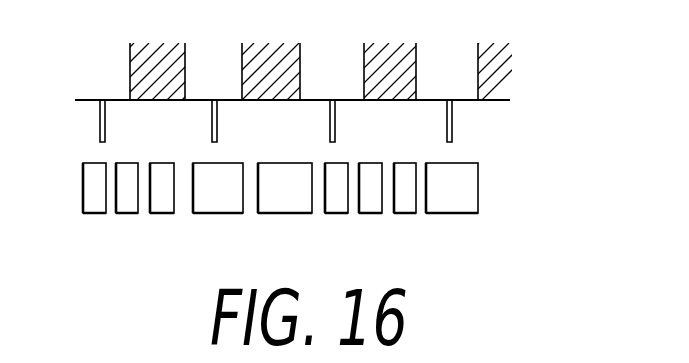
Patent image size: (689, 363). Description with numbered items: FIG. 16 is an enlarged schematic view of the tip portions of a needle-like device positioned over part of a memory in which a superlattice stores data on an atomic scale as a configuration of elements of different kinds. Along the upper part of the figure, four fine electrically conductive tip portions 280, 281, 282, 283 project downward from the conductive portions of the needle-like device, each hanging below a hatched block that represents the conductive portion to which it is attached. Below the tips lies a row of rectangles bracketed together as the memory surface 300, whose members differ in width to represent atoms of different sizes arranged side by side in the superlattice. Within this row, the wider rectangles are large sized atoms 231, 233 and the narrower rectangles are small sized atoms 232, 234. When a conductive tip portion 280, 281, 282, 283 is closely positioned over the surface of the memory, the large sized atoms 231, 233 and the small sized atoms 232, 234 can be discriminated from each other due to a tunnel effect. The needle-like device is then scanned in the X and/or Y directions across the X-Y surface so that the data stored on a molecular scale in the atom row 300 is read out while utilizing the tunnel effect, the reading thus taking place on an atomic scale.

The pin 280 is at (105, 128).
The pin 281 is at (217, 128).
The pin 282 is at (335, 128).
The pin 283 is at (452, 128).
The large sized atom 231 is at (443, 215).
The small sized atom 232 is at (335, 215).
The large sized atom 233 is at (215, 215).
The small sized atom 234 is at (95, 215).
The key row 300 is at (317, 214).